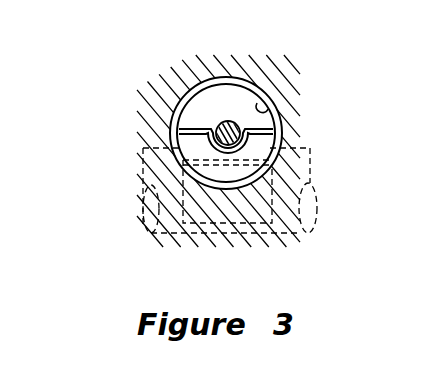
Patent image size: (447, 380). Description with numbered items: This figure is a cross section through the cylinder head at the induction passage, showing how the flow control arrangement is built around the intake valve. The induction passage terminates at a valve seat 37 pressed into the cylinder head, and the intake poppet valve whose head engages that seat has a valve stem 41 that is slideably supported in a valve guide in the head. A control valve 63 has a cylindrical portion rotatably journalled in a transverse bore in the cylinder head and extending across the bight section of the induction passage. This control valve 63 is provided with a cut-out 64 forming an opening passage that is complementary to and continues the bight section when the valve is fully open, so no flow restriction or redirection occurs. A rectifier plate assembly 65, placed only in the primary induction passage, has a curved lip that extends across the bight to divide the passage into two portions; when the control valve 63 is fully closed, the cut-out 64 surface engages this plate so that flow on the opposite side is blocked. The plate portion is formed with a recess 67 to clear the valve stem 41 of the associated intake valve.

The valve seat 37 is at (262, 112).
The valve stem 41 is at (228, 124).
The control valve 63 is at (140, 164).
The cut-out 64 is at (211, 147).
The rectifier plate assembly 65 is at (195, 117).
The recess 67 is at (236, 128).